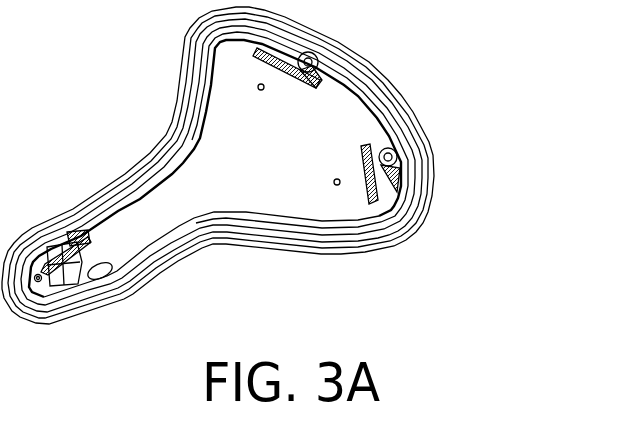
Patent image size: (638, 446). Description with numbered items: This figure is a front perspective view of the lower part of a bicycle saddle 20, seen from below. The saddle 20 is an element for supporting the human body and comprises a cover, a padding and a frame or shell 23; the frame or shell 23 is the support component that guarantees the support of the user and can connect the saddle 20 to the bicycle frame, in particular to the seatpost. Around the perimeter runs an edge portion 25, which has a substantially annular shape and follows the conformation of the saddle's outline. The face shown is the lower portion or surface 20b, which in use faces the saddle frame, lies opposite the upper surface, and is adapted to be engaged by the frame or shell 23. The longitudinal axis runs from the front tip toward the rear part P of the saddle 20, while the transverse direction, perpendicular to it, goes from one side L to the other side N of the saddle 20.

The bicycle saddle 20 is at (0, 373).
The lower portion or surface 20b is at (314, 208).
The frame or shell 23 is at (278, 166).
The edge portion 25 is at (128, 305).
The side of the saddle N is at (229, 258).
The side of the saddle L is at (131, 133).
The rear part of the saddle P is at (384, 60).